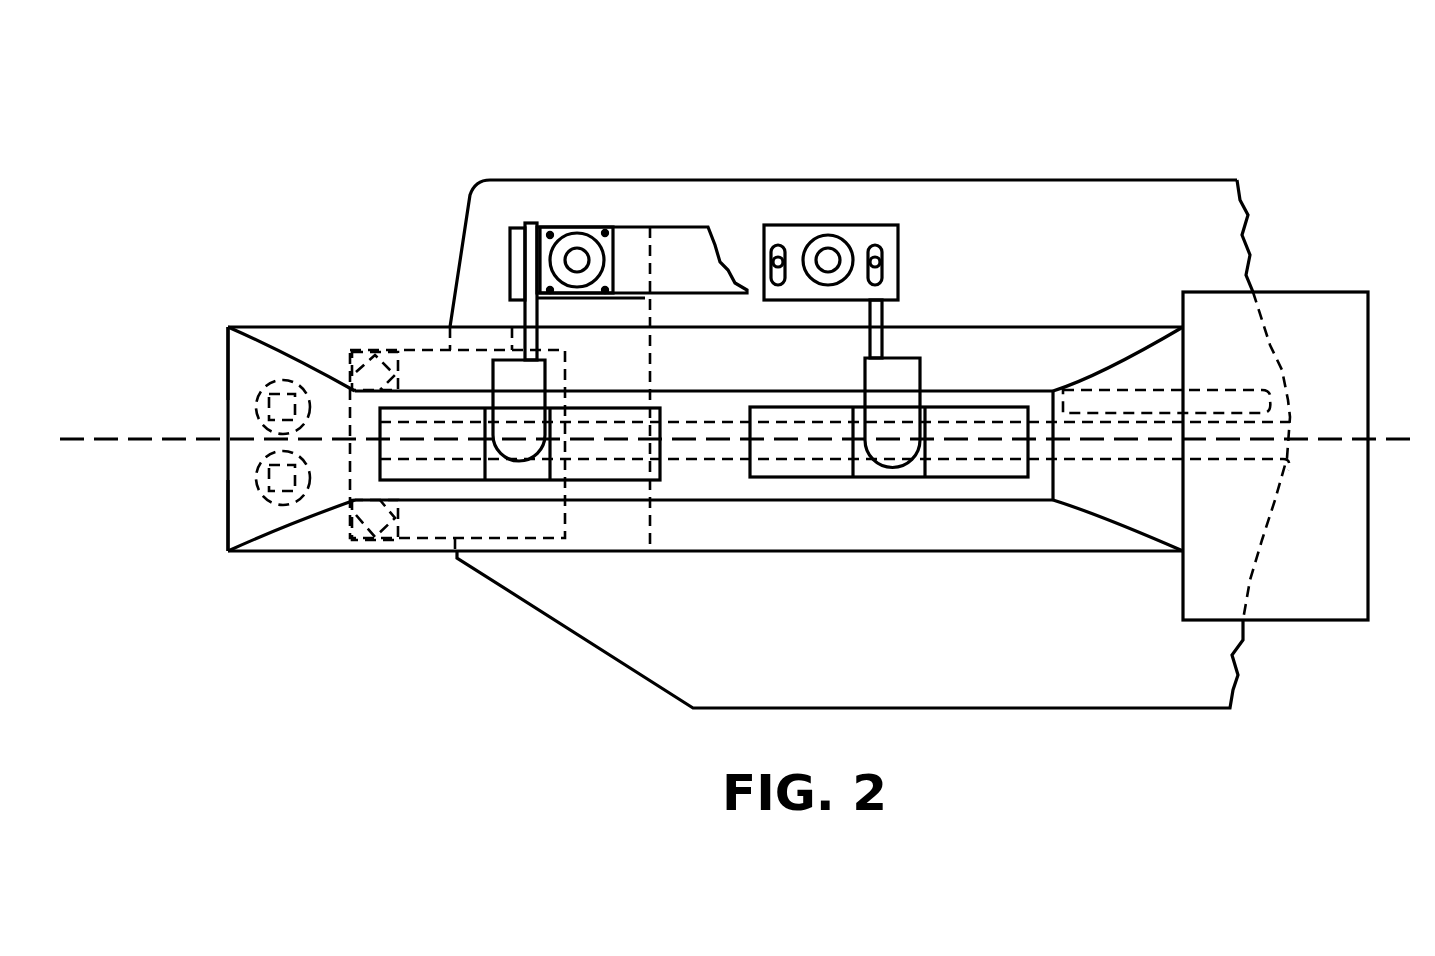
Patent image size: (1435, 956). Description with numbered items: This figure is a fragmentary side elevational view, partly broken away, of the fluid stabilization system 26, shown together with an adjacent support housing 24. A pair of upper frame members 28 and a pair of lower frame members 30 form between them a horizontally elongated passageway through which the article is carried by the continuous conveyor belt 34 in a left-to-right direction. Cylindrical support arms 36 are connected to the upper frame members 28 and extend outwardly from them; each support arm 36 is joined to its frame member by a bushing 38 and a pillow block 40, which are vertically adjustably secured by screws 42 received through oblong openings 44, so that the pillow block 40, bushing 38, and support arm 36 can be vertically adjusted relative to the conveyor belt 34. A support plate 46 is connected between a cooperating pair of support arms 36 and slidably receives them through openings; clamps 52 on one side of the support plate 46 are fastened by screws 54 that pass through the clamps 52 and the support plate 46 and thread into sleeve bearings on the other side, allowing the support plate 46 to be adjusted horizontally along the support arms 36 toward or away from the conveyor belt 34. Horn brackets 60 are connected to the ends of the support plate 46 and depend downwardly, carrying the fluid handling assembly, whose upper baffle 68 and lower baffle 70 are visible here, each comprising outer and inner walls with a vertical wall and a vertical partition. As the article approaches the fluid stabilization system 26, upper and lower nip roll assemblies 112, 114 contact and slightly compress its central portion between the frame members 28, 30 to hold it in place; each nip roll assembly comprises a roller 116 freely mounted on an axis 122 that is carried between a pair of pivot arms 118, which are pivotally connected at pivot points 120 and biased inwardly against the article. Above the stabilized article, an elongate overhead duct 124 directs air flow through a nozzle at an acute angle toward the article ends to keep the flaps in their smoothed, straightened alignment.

The support housing 24 is at (1337, 262).
The fluid stabilization system 26 is at (358, 152).
The upper frame member 28 is at (1137, 203).
The lower frame member 30 is at (1097, 685).
The conveyor belt 34 is at (97, 437).
The support arm 36 is at (572, 233).
The bushing 38 is at (848, 245).
The pillow block 40 is at (877, 228).
The screw 42 is at (770, 263).
The oblong opening 44 is at (778, 250).
The support plate 46 is at (676, 246).
The clamp 52 is at (578, 258).
The screw 54 is at (550, 233).
The horn bracket 60 is at (525, 225).
The upper baffle 68 is at (243, 327).
The lower baffle 70 is at (275, 542).
The upper nip roll assembly 112 is at (238, 365).
The lower nip roll assembly 114 is at (236, 524).
The roller 116 is at (345, 400).
The pivot arm 118 is at (343, 340).
The pivot point 120 is at (377, 350).
The axis 122 is at (297, 380).
The overhead duct 124 is at (1205, 388).